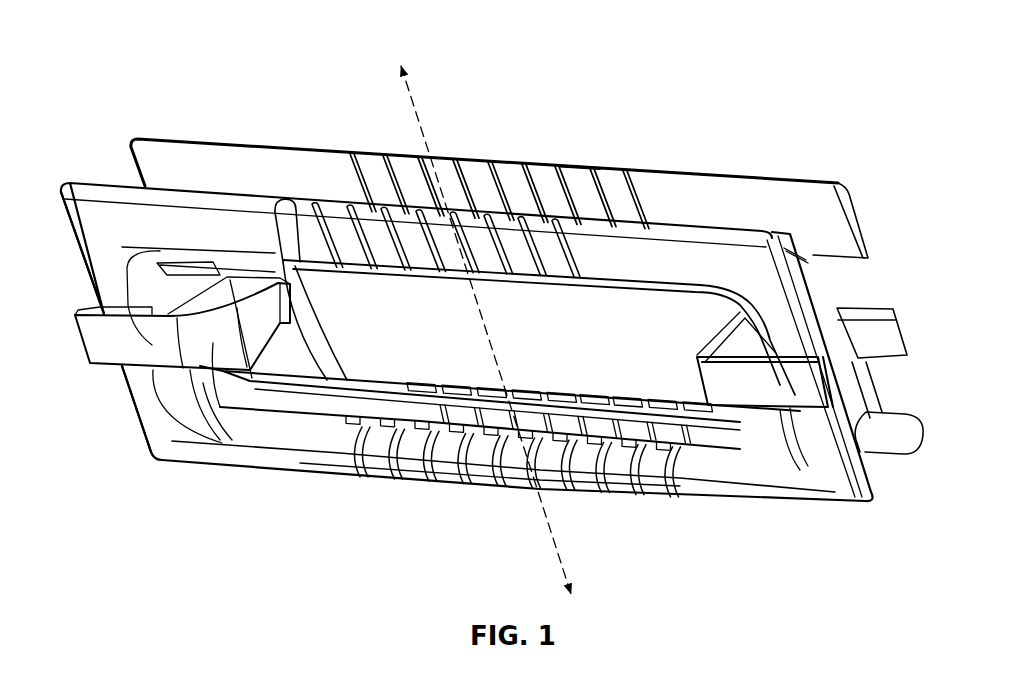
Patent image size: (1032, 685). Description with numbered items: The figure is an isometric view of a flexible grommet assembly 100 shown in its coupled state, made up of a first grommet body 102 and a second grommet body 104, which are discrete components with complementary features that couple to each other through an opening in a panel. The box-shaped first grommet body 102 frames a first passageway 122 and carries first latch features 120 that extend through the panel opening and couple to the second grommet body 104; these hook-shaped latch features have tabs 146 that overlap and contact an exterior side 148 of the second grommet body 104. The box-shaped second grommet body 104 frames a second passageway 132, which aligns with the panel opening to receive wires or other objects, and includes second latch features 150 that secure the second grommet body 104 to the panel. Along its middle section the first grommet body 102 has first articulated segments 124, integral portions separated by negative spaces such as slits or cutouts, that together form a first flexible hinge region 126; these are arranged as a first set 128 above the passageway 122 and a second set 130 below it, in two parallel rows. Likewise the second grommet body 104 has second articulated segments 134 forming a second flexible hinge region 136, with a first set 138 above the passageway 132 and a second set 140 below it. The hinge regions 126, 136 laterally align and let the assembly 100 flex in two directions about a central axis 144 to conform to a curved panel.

The flexible grommet assembly 100 is at (86, 95).
The first grommet body 102 is at (499, 168).
The second grommet body 104 is at (445, 311).
The first latch features 120 is at (217, 350).
The first passageway 122 is at (378, 373).
The first articulated segments 124 is at (477, 175).
The first flexible hinge region 126 is at (535, 170).
The first set of the first articulated segments 128 is at (580, 162).
The second set of the first articulated segments 130 is at (710, 433).
The second passageway 132 is at (632, 296).
The second articulated segments 134 is at (514, 260).
The second flexible hinge region 136 is at (394, 214).
The first set of the second articulated segments 138 is at (262, 235).
The second set of the second articulated segments 140 is at (357, 457).
The central axis 144 is at (410, 86).
The tabs 146 is at (113, 347).
The exterior side 148 is at (153, 407).
The second latch features 150 is at (878, 302).